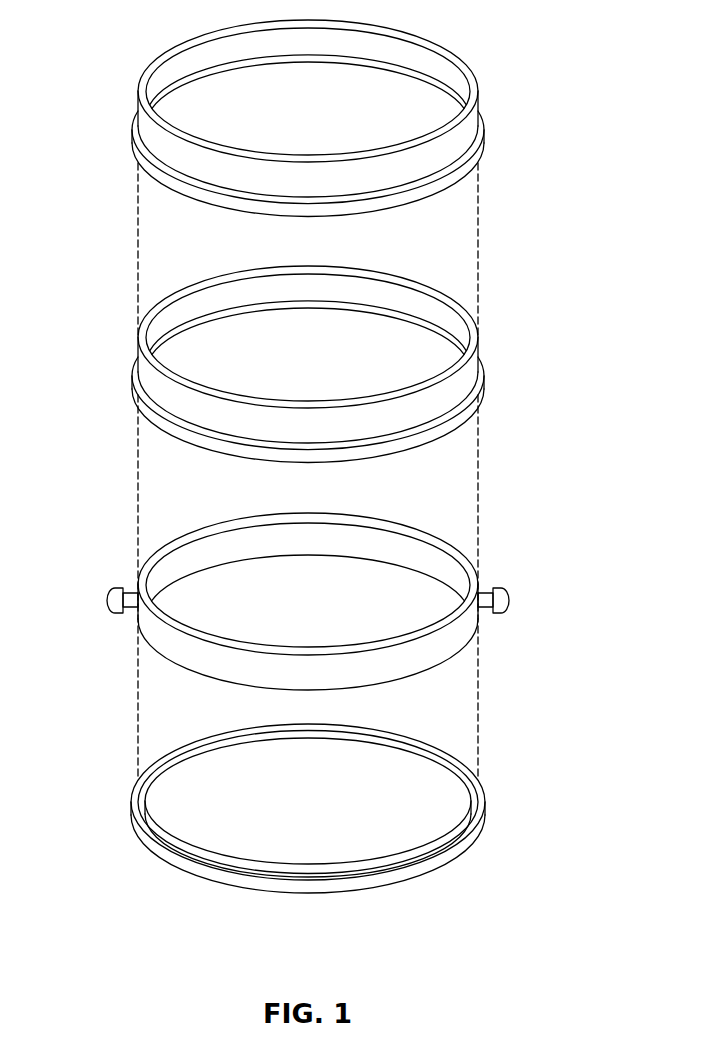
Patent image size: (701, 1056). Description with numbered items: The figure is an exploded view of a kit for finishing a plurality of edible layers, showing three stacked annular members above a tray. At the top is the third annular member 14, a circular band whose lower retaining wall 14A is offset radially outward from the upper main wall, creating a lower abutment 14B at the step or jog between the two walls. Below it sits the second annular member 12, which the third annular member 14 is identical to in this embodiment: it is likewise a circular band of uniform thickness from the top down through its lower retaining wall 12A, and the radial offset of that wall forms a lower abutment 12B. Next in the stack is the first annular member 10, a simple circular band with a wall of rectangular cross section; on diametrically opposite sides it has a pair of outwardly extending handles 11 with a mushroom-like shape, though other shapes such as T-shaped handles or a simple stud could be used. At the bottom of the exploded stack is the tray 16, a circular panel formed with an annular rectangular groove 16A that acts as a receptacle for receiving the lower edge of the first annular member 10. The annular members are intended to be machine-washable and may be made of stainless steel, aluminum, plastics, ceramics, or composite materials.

The first annular member 10 is at (310, 601).
The handles 11 is at (107, 600).
The second annular member 12 is at (341, 364).
The lower retaining wall 12A is at (340, 410).
The lower abutment 12B is at (308, 327).
The third annular member 14 is at (340, 118).
The lower retaining wall 14A is at (463, 167).
The lower abutment 14B is at (314, 59).
The tray 16 is at (328, 843).
The annular rectangular groove 16A is at (305, 866).